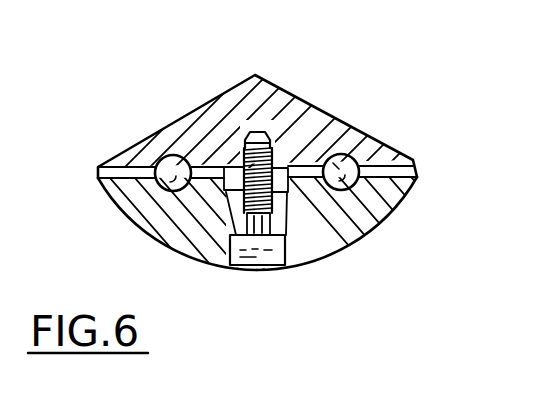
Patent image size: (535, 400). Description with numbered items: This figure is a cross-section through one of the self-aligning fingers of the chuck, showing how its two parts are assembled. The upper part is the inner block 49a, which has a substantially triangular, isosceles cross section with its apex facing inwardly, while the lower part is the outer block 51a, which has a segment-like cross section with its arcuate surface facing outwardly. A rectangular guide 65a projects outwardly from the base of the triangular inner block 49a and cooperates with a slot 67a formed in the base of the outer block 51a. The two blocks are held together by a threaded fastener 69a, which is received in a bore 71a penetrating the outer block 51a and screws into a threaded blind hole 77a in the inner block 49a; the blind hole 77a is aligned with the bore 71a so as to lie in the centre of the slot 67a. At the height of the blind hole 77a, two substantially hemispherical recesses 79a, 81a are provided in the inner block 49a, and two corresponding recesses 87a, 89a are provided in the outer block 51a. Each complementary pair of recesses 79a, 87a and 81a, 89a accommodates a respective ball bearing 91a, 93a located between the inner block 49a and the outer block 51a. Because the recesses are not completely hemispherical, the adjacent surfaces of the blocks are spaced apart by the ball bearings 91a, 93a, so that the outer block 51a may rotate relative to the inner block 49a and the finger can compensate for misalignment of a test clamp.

The inner block 49a is at (284, 112).
The outer block 51a is at (380, 220).
The rectangular guide 65a is at (281, 160).
The slot 67a is at (289, 190).
The threaded fastener 69a is at (240, 270).
The bore 71a is at (300, 268).
The threaded blind hole 77a is at (242, 145).
The hemispherical recess 79a is at (170, 155).
The hemispherical recess 81a is at (344, 158).
The recess 87a is at (142, 213).
The recess 89a is at (380, 178).
The ball bearing 91a is at (158, 161).
The ball bearing 93a is at (350, 153).